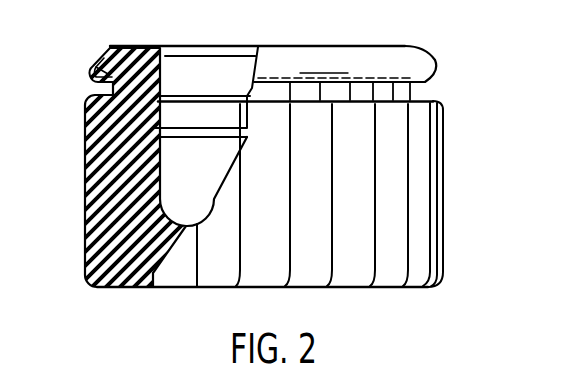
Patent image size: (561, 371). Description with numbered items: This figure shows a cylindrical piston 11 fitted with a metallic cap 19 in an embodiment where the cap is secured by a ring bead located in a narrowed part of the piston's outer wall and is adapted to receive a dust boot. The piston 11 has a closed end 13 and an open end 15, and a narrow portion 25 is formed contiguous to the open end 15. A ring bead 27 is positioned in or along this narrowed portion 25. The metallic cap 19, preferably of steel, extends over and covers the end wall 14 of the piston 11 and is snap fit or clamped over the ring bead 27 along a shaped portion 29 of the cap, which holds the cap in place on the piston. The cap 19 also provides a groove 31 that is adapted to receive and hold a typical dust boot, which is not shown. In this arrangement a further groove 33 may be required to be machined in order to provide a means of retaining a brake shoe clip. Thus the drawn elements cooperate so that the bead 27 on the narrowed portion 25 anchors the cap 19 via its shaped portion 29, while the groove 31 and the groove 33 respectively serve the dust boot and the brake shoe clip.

The cylindrical piston 11 is at (443, 208).
The closed end 13 is at (270, 281).
The end wall 14 is at (128, 47).
The open end 15 is at (207, 180).
The metallic cap 19 is at (228, 52).
The narrow portion 25 is at (120, 46).
The ring bead 27 is at (97, 63).
The shaped portion 29 is at (90, 75).
The groove 31 is at (113, 93).
The groove 33 is at (162, 108).